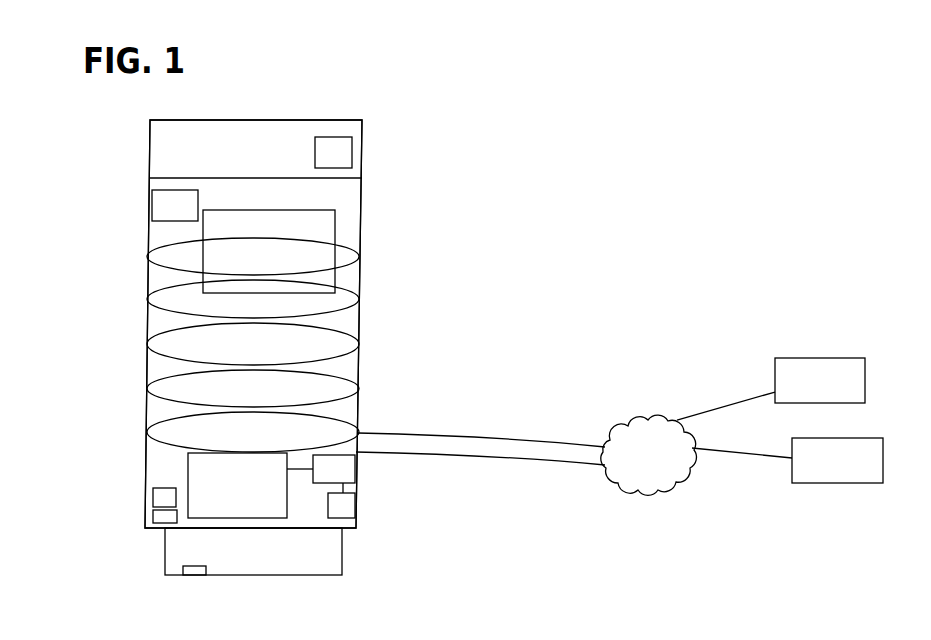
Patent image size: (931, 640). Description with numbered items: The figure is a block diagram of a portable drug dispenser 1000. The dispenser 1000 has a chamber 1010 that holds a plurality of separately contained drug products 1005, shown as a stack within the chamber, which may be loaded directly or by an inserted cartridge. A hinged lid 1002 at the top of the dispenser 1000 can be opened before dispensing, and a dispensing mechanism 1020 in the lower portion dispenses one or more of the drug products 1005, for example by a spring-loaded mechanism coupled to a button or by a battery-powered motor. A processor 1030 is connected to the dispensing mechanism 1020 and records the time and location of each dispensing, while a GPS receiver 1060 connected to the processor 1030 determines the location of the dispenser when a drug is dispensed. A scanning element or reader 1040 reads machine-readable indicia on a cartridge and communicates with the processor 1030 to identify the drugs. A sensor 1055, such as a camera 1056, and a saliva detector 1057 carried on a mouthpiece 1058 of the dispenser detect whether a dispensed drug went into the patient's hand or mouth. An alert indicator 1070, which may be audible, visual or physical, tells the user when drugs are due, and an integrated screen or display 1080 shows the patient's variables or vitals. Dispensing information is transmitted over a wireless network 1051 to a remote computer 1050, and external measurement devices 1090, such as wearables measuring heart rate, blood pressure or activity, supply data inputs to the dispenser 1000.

The portable drug dispenser 1000 is at (150, 198).
The hinged lid 1002 is at (267, 138).
The separately contained drug products 1005 is at (255, 345).
The chamber 1010 is at (335, 197).
The dispensing mechanism 1020 is at (254, 503).
The processor 1030 is at (332, 467).
The scanning element or reader 1040 is at (170, 211).
The remote computer 1050 is at (787, 460).
The wireless network 1051 is at (675, 477).
The sensor 1055 is at (160, 500).
The camera 1056 is at (165, 523).
The saliva detector 1057 is at (192, 573).
The mouthpiece 1058 is at (342, 548).
The GPS receiver 1060 is at (340, 505).
The alert indicator 1070 is at (337, 155).
The integrated screen or display 1080 is at (282, 233).
The external measurement devices 1090 is at (771, 389).